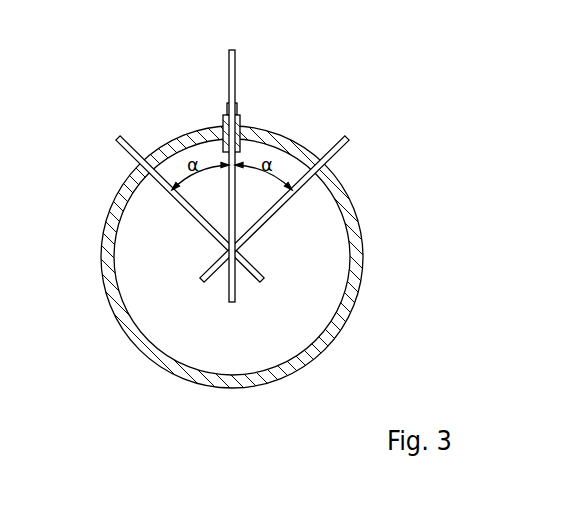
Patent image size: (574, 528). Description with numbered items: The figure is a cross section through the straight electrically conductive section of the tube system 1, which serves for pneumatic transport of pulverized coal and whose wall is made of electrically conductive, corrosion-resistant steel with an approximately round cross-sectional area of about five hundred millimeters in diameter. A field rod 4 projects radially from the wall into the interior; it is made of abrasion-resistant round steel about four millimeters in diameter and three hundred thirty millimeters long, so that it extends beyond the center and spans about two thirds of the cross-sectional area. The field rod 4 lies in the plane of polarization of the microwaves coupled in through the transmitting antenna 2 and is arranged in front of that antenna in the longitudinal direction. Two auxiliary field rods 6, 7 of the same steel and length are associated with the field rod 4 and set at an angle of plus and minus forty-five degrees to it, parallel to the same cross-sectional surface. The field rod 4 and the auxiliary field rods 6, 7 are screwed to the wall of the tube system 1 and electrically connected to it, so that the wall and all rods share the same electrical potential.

The tube system 1 is at (359, 245).
The transmitting antenna 2 is at (233, 68).
The field rod 4 is at (240, 133).
The auxiliary field rod 6 is at (347, 139).
The auxiliary field rod 7 is at (117, 137).